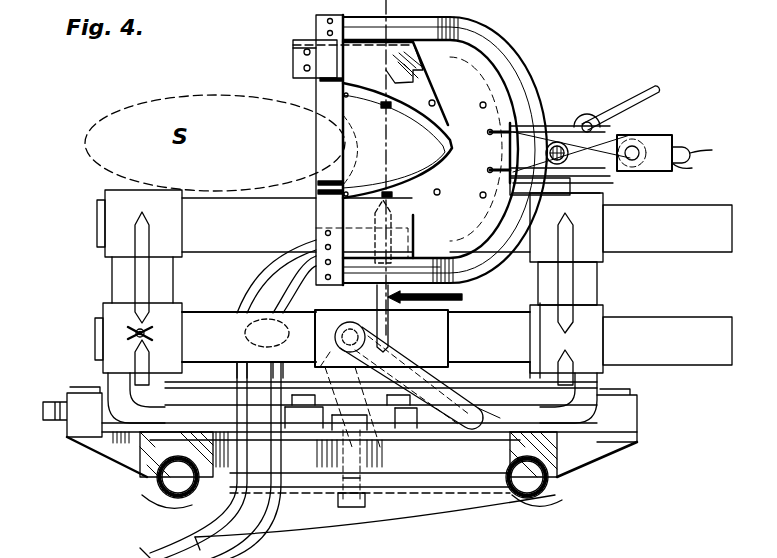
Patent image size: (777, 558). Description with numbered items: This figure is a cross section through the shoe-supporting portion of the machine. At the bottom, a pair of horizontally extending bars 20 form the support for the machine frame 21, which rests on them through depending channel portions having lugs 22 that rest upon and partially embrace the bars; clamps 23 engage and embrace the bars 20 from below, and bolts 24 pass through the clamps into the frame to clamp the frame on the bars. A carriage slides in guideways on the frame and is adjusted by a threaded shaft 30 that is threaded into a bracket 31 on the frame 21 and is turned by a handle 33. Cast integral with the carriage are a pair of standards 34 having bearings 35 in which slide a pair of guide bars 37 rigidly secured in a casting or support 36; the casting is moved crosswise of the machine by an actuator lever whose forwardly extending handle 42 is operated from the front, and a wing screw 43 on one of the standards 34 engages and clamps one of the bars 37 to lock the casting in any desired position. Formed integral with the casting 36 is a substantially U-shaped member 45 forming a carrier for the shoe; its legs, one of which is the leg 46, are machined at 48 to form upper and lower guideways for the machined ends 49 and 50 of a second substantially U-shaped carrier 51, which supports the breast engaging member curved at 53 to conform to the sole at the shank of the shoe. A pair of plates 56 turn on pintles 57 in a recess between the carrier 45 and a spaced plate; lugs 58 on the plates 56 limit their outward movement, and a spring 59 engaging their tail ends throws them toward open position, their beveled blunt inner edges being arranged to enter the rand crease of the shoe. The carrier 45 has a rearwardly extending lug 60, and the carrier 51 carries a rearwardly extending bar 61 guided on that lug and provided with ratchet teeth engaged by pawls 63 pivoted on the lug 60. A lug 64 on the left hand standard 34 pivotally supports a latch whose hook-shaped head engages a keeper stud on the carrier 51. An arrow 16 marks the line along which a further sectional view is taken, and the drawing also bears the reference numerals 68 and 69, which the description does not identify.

The section line 16 is at (430, 297).
The horizontally extending bars 20 is at (160, 493).
The frame 21 is at (147, 452).
The lugs 22 is at (140, 448).
The clamps 23 is at (369, 459).
The bolts 24 is at (345, 478).
The threaded shaft 30 is at (340, 336).
The bracket 31 is at (335, 330).
The handle 33 is at (506, 417).
The standards 34 is at (122, 280).
The bearings 35 is at (120, 210).
The casting 36 is at (381, 326).
The guide bars 37 is at (678, 335).
The handle 42 is at (195, 547).
The wing screw 43 is at (150, 336).
The carrier 45 is at (655, 138).
The leg 46 is at (295, 60).
The machined guideways 48 is at (315, 46).
The machined end 49 is at (127, 548).
The machined end 50 is at (268, 280).
The carrier 51 is at (535, 128).
The curved portion 53 is at (332, 128).
The plates 56 is at (345, 95).
The pintles 57 is at (432, 105).
The lugs 58 is at (386, 105).
The spring 59 is at (583, 118).
The lug 60 is at (660, 165).
The bar 61 is at (692, 168).
The pawls 63 is at (648, 96).
The lug 64 is at (603, 182).
The knob 68 is at (690, 157).
The stem 69 is at (708, 150).